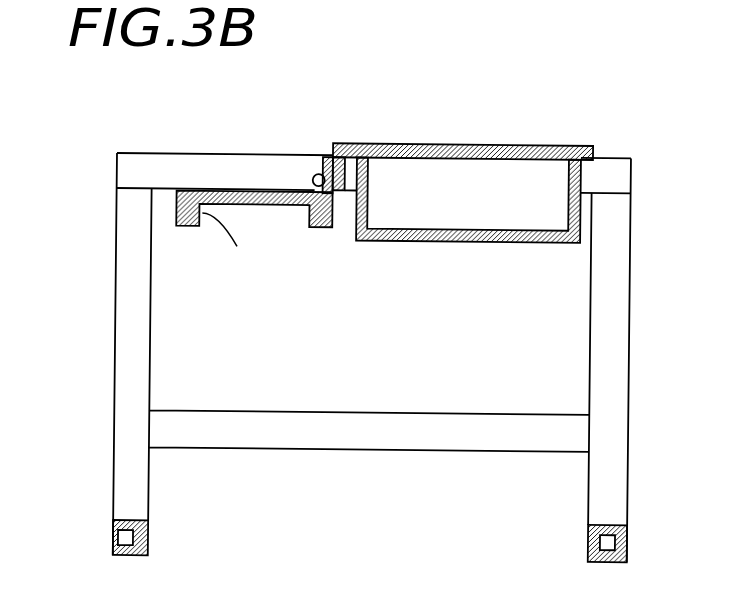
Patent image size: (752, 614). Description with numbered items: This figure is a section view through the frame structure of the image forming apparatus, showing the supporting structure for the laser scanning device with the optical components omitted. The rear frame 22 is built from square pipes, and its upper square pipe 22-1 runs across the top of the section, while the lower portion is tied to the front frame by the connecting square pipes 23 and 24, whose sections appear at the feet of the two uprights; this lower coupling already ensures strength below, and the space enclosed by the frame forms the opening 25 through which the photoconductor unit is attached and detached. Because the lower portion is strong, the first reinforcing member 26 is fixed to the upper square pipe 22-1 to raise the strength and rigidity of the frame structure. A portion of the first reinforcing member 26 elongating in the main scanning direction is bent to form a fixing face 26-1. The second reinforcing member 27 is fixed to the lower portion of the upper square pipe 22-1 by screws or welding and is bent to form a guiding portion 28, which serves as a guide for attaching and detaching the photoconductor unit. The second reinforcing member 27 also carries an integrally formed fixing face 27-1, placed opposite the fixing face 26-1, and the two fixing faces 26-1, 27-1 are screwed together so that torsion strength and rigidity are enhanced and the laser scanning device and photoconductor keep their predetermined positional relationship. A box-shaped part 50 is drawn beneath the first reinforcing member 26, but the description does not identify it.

The rear frame 22 is at (117, 321).
The upper square pipe 22-1 is at (117, 153).
The square pipe 23 is at (117, 540).
The square pipe 24 is at (593, 544).
The opening 25 is at (210, 298).
The first reinforcing member 26 is at (470, 141).
The fixing face 26-1 is at (333, 148).
The second reinforcing member 27 is at (242, 190).
The fixing face 27-1 is at (323, 168).
The guiding portion 28 is at (310, 213).
The tray 50 is at (470, 242).